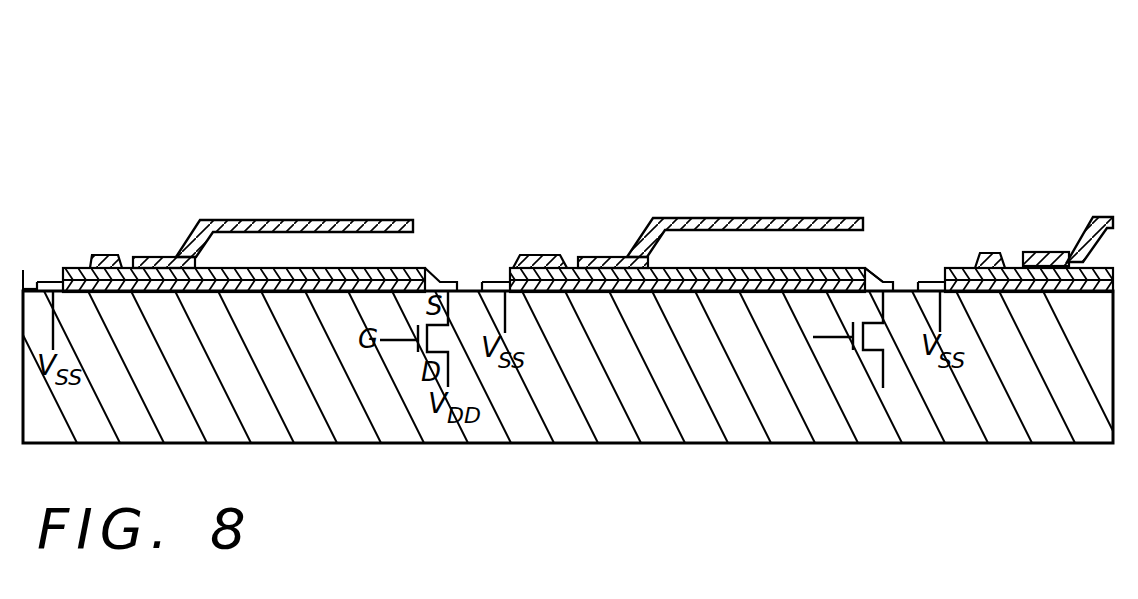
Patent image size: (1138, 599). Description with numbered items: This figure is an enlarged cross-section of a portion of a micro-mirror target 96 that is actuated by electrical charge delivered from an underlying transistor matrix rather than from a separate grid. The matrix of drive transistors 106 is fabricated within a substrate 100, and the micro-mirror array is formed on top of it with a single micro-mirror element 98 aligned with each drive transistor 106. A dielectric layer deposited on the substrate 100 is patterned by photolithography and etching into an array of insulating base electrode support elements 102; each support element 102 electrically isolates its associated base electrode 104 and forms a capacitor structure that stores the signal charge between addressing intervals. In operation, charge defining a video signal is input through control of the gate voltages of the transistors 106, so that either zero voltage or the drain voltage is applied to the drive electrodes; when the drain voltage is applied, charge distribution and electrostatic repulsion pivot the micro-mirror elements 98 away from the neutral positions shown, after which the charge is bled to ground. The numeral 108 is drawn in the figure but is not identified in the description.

The target 96 is at (347, 152).
The micro-mirror element 98 is at (743, 218).
The substrate 100 is at (287, 383).
The insulating base electrode support element 102 is at (622, 291).
The base electrode 104 is at (878, 270).
The drive transistor 106 is at (837, 355).
The insulating layer 108 is at (517, 265).